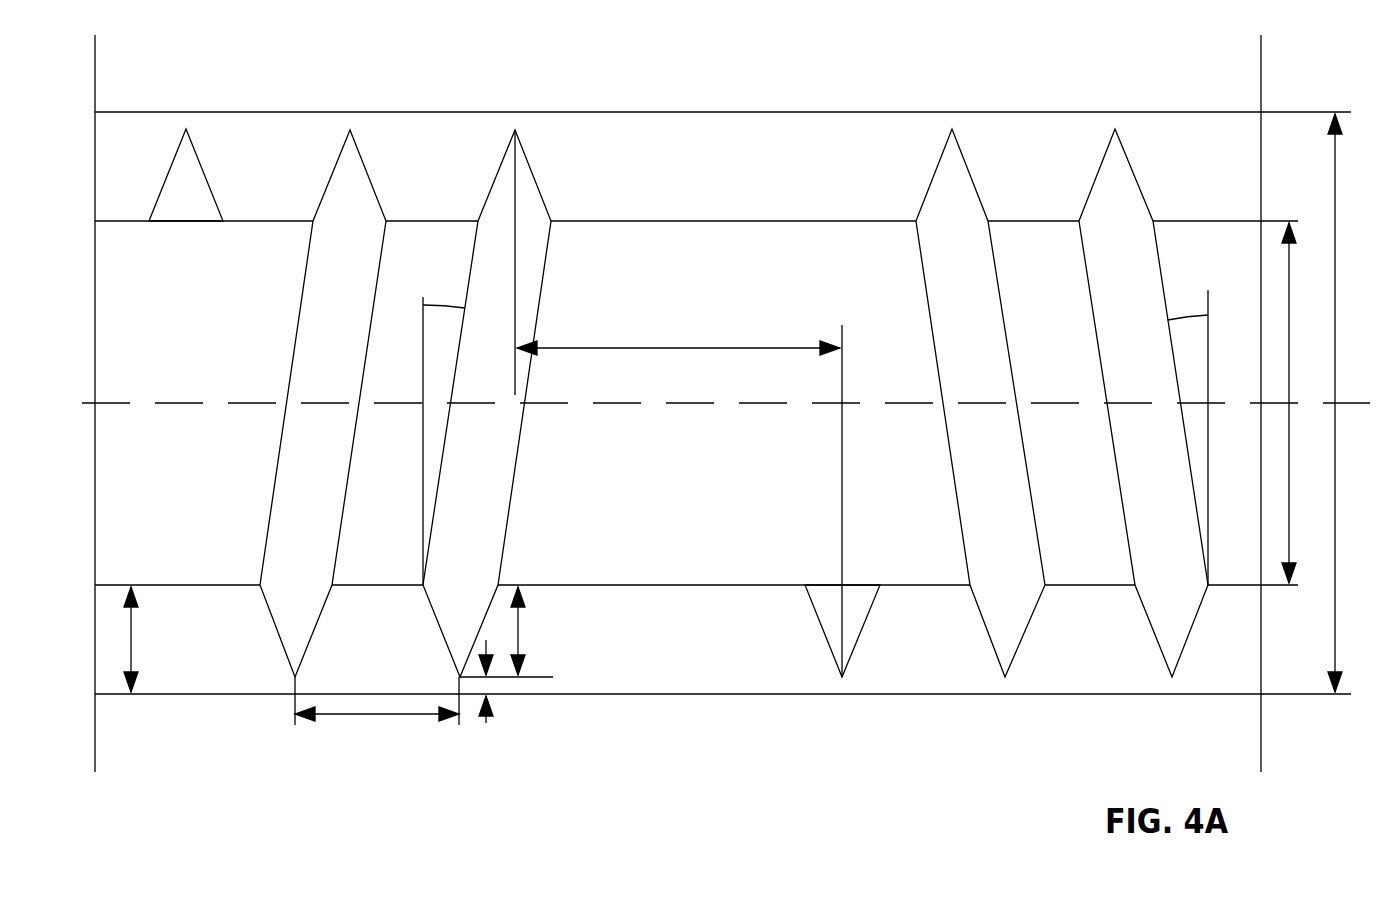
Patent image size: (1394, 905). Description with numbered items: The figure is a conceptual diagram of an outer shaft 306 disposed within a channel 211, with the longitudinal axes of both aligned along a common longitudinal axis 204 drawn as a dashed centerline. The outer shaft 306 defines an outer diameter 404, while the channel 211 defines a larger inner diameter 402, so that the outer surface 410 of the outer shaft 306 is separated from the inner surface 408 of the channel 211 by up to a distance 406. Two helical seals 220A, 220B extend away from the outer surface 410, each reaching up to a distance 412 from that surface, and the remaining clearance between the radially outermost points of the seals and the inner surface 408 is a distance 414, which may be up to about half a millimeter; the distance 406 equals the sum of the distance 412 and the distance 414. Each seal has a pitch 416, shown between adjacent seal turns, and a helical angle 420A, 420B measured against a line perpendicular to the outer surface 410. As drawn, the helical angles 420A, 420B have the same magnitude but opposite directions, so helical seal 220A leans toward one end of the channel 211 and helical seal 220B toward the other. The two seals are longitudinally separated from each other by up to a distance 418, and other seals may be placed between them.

The longitudinal axis 204 is at (168, 403).
The channel 211 is at (732, 177).
The outer shaft 306 is at (625, 270).
The outer surface 410 is at (659, 585).
The inner surface 408 is at (660, 694).
The helical seal 220B is at (422, 140).
The helical seal 220A is at (1033, 133).
The helical angle 420B is at (438, 304).
The helical angle 420A is at (1185, 317).
The inner diameter 402 is at (1335, 542).
The outer diameter 404 is at (1289, 462).
The distance 406 is at (131, 640).
The distance 412 is at (518, 630).
The distance 414 is at (486, 723).
The pitch 416 is at (395, 714).
The distance 418 is at (706, 348).